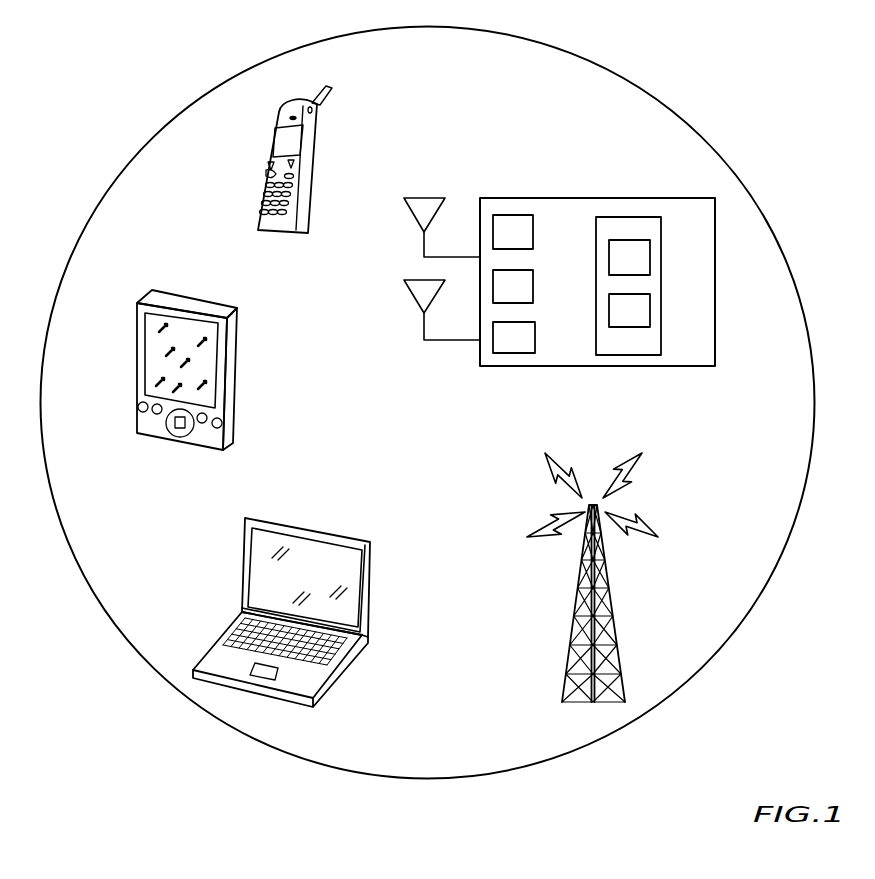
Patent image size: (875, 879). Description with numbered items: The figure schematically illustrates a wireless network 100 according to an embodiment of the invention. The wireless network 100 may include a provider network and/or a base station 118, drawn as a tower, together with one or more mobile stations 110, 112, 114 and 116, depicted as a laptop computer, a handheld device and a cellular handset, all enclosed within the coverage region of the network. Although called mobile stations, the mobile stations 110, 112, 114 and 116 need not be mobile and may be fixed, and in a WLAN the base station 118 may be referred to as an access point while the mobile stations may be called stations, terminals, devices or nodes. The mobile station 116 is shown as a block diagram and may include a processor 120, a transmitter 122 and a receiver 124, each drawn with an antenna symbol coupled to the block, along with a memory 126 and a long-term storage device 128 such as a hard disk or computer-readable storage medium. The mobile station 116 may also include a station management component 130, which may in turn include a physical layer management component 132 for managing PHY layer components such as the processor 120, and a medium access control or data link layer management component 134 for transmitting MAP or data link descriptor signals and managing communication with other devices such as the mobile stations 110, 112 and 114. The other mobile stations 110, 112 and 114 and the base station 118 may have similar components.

The wireless network 100 is at (789, 140).
The mobile station 110 is at (313, 530).
The mobile station 112 is at (238, 393).
The mobile station 114 is at (271, 144).
The mobile station 116 is at (607, 198).
The base station 118 is at (617, 635).
The processor 120 is at (533, 236).
The transmitter 122 is at (425, 198).
The receiver 124 is at (425, 280).
The memory 126 is at (533, 290).
The long-term storage device 128 is at (535, 345).
The station management component 130 is at (627, 217).
The physical layer management component 132 is at (650, 258).
The medium access control or data link layer management component 134 is at (650, 310).